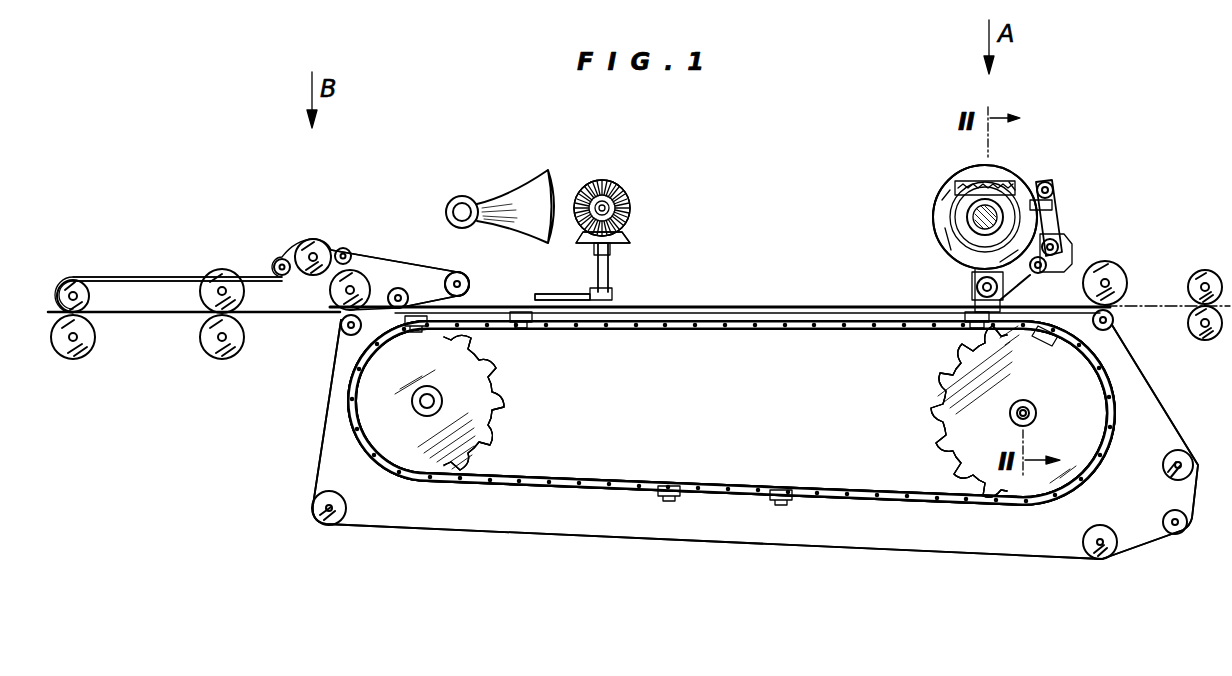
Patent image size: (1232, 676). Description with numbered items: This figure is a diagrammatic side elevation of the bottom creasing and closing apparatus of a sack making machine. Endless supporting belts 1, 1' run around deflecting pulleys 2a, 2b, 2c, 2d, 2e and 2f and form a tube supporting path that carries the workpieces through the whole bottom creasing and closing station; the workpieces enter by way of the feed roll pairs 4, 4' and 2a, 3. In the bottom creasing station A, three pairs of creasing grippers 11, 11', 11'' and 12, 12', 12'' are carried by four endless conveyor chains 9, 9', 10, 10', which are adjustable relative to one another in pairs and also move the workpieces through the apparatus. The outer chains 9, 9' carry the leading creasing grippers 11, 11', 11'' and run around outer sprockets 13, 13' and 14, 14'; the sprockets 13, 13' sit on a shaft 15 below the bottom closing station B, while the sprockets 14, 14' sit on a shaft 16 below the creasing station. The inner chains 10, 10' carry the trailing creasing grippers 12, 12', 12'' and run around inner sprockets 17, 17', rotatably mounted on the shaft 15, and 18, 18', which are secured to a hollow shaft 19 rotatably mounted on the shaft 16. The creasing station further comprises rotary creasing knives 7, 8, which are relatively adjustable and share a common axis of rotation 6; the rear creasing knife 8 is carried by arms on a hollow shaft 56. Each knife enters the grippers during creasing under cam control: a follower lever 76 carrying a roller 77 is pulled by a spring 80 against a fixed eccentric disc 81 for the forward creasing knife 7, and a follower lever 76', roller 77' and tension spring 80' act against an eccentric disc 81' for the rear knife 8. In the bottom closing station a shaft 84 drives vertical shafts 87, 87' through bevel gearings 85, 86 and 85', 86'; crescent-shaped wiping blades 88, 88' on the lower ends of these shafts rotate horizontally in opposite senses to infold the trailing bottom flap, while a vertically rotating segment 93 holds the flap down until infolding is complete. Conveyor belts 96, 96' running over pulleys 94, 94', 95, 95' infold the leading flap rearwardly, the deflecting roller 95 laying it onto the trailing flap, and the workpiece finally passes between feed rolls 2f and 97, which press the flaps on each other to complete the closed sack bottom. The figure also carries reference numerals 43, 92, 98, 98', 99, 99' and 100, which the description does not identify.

The endless supporting belt 1 is at (755, 439).
The endless supporting belt 1' is at (762, 439).
The deflecting pulley 2a is at (1113, 320).
The deflecting pulley 2b is at (1164, 466).
The deflecting pulley 2c is at (1176, 532).
The deflecting pulley 2d is at (1102, 559).
The deflecting pulley 2e is at (326, 525).
The deflecting pulley 2f is at (340, 328).
The feed roll 3 is at (1105, 262).
The feed roll 4 is at (1193, 277).
The feed roll 4' is at (1190, 335).
The common axis of rotation 6 is at (962, 218).
The forward creasing knife 7 is at (970, 290).
The rear creasing knife 8 is at (1064, 255).
The endless conveyor chain 9 is at (731, 413).
The endless conveyor chain 9' is at (731, 413).
The inner endless conveyor chain 10 is at (731, 413).
The inner endless conveyor chain 10' is at (731, 413).
The leading creasing gripper 11 is at (984, 343).
The leading creasing gripper 11' is at (426, 343).
The leading creasing gripper 11'' is at (810, 507).
The trailing creasing gripper 12 is at (1048, 350).
The trailing creasing gripper 12' is at (534, 341).
The trailing creasing gripper 12'' is at (689, 507).
The outer sprocket 13 is at (499, 402).
The outer sprocket 13' is at (495, 419).
The inner sprocket 17 is at (537, 402).
The inner sprocket 17' is at (554, 402).
The outer sprocket 14 is at (901, 411).
The outer sprocket 14' is at (953, 404).
The inner sprocket 18 is at (939, 411).
The inner sprocket 18' is at (956, 411).
The shaft 15 is at (412, 402).
The shaft 16 is at (1011, 414).
The hollow shaft 19 is at (1030, 414).
The hub 43 is at (970, 212).
The hollow shaft 56 is at (982, 206).
The follower lever 76 is at (1004, 290).
The follower lever 76' is at (1063, 188).
The roller 77 is at (1043, 269).
The roller 77' is at (1055, 169).
The spring 80 is at (1068, 218).
The tension spring 80' is at (994, 168).
The fixed eccentric disc 81 is at (953, 232).
The eccentric disc 81' is at (971, 217).
The shaft 84 is at (584, 186).
The bevel gear 85 is at (613, 191).
The bevel gear 85' is at (630, 191).
The bevel gear 86 is at (628, 215).
The bevel gear 86' is at (645, 215).
The vertical shaft 87 is at (634, 263).
The vertical shaft 87' is at (653, 263).
The crescent-shaped wiping blade 88 is at (570, 282).
The crescent-shaped wiping blade 88' is at (567, 282).
The nozzle ring 92 is at (459, 196).
The vertically rotating segment 93 is at (506, 202).
The pulley 94 is at (463, 275).
The pulley 94' is at (480, 275).
The deflecting roller 95 is at (385, 273).
The pulley 95' is at (394, 272).
The conveyor belt 96 is at (184, 270).
The conveyor belt 96' is at (177, 254).
The feed roll 97 is at (330, 290).
The roller 98 is at (222, 274).
The roller 98' is at (218, 352).
The roller 99 is at (74, 274).
The roller 99' is at (73, 352).
The pulley 100 is at (313, 239).